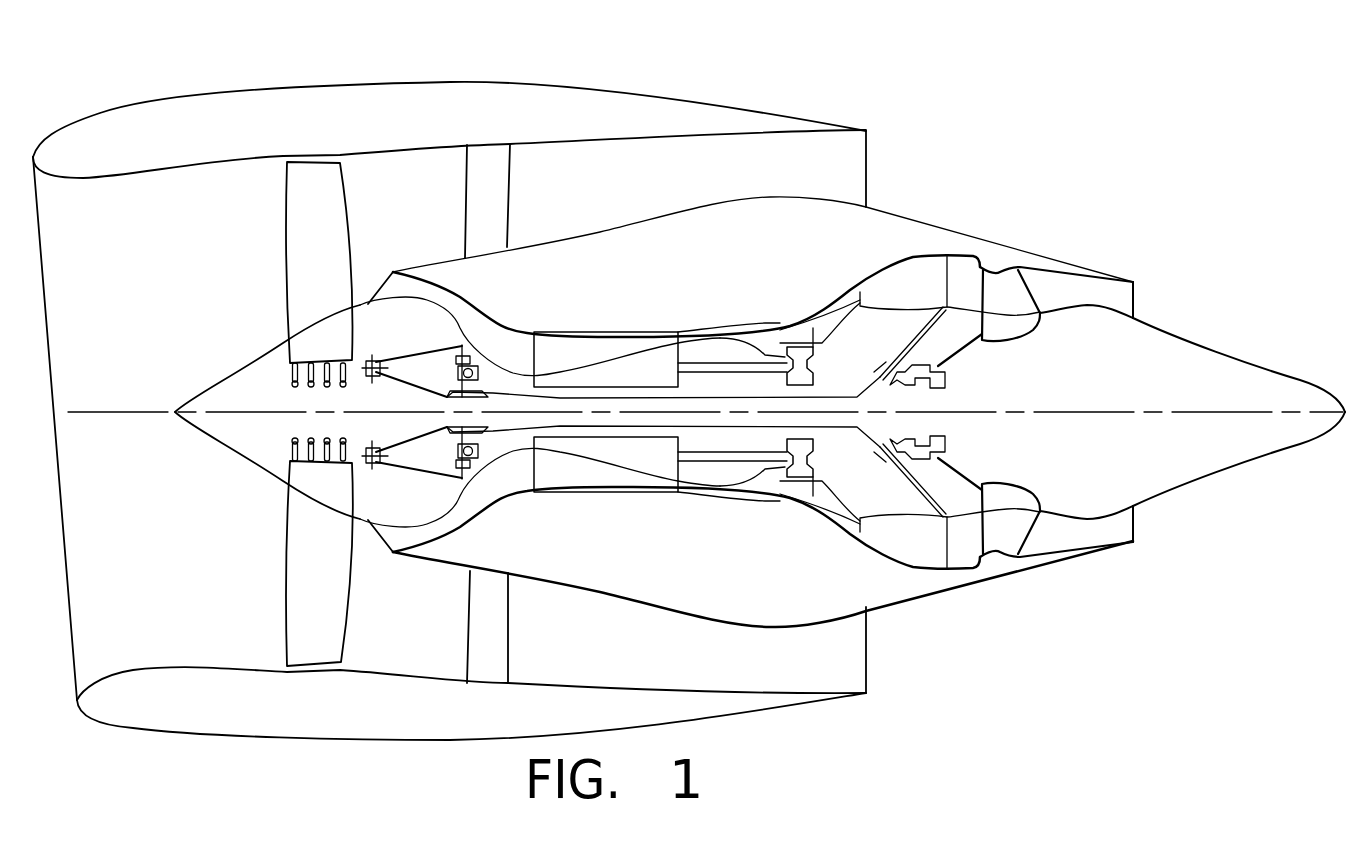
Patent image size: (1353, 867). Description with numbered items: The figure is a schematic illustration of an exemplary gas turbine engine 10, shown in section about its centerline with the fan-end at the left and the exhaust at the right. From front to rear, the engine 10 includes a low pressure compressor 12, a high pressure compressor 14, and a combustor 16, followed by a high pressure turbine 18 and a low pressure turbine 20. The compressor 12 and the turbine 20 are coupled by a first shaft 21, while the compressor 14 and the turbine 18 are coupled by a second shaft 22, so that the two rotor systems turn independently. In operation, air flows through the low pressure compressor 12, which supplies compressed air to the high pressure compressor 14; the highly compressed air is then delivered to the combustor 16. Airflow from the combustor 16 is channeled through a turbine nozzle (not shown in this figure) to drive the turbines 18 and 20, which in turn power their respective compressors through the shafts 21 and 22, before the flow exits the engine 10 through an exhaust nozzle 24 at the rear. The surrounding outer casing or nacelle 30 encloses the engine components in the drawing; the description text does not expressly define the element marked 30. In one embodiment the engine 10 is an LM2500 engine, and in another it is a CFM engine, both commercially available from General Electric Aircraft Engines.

The gas turbine engine 10 is at (752, 47).
The low pressure compressor 12 is at (325, 563).
The high pressure compressor 14 is at (557, 350).
The combustor 16 is at (753, 337).
The high pressure turbine 18 is at (803, 488).
The low pressure turbine 20 is at (905, 278).
The first shaft 21 is at (372, 386).
The second shaft 22 is at (526, 397).
The exhaust nozzle 24 is at (1102, 277).
The nacelle 30 is at (912, 152).